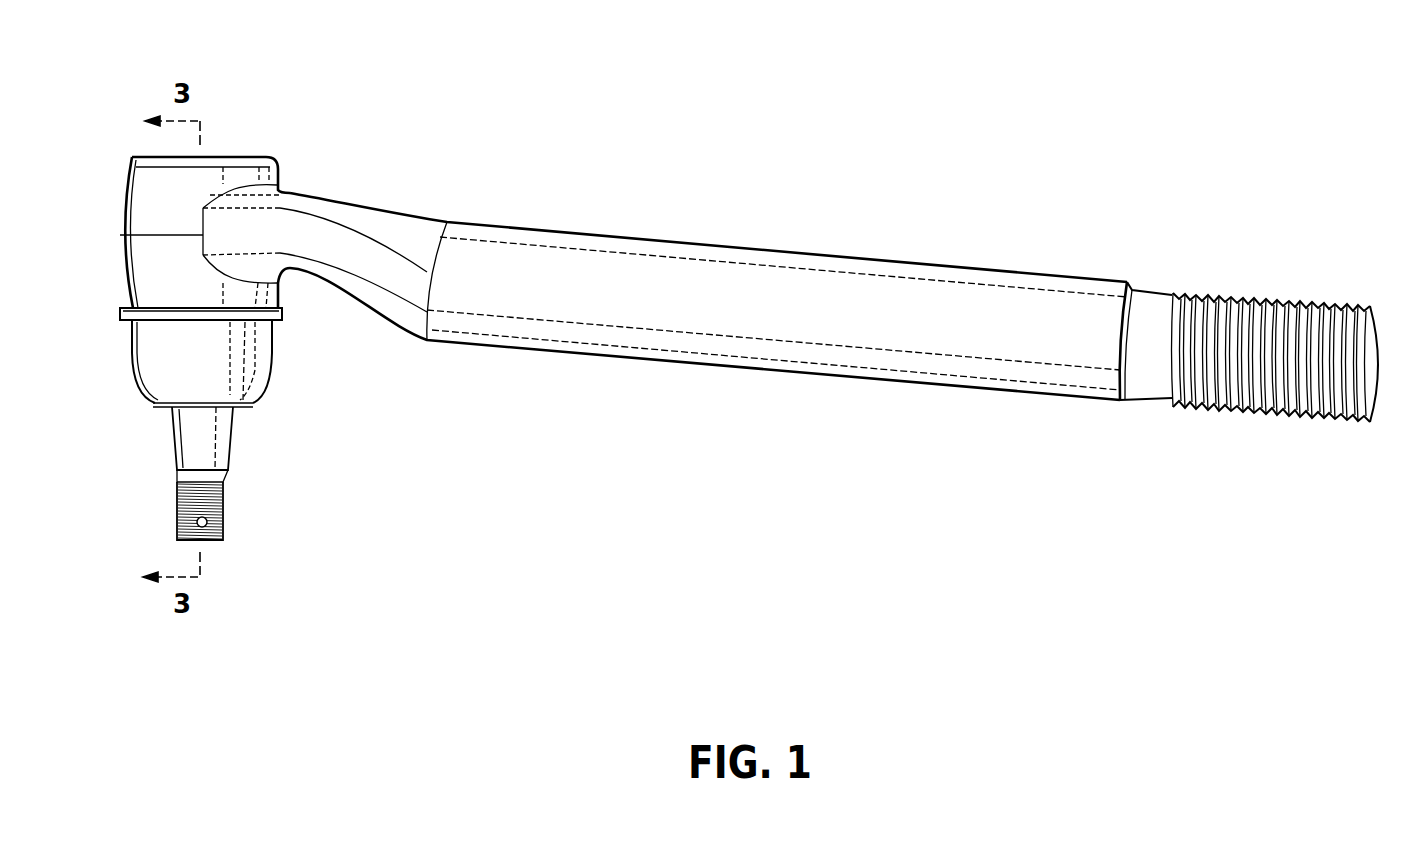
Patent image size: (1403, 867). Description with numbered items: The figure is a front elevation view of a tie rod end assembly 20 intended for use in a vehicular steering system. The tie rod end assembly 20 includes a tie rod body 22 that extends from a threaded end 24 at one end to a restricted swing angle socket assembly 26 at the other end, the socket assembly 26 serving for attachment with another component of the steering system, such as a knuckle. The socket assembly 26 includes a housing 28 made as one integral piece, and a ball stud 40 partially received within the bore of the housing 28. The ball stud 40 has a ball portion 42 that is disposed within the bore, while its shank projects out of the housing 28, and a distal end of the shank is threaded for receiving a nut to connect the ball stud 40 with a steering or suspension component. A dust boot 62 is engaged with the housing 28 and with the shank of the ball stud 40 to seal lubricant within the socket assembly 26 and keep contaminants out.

The tie rod end assembly 20 is at (1182, 122).
The tie rod body 22 is at (655, 237).
The threaded end 24 is at (1303, 413).
The restricted swing angle socket assembly 26 is at (113, 367).
The housing 28 is at (120, 233).
The ball stud 40 is at (170, 450).
The ball portion 42 is at (222, 430).
The dust boot 62 is at (240, 343).